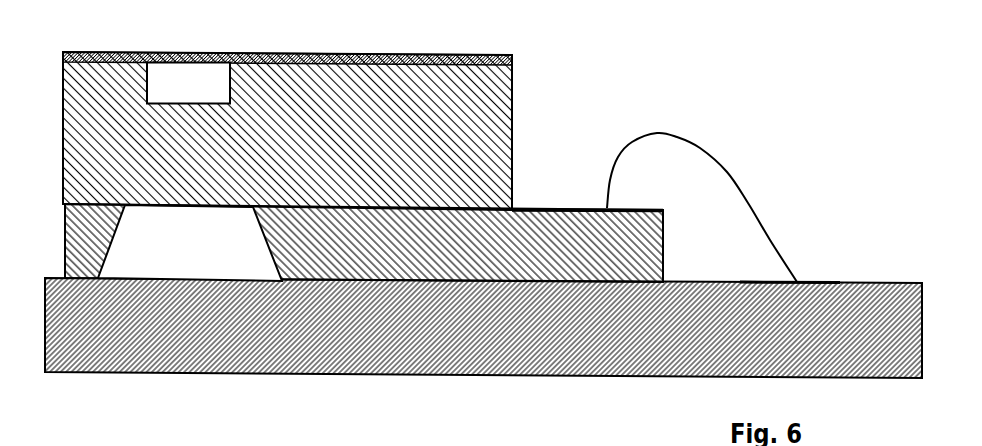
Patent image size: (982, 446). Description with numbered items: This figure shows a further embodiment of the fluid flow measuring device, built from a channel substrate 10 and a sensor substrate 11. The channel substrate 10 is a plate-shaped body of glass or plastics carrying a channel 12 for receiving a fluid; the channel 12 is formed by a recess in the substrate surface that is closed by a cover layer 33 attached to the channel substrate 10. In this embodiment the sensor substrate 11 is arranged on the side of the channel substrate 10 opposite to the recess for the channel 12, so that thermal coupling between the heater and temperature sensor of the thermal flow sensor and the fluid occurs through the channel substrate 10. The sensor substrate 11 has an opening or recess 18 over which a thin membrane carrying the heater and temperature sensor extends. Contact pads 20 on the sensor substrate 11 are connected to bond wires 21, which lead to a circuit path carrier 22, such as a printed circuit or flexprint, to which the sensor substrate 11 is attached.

The channel substrate 10 is at (291, 112).
The sensor substrate 11 is at (343, 240).
The channel 12 is at (203, 94).
The opening or recess 18 is at (203, 250).
The contact pads 20 is at (587, 177).
The bond wires 21 is at (702, 190).
The circuit path carrier 22 is at (483, 355).
The cover layer 33 is at (287, 33).